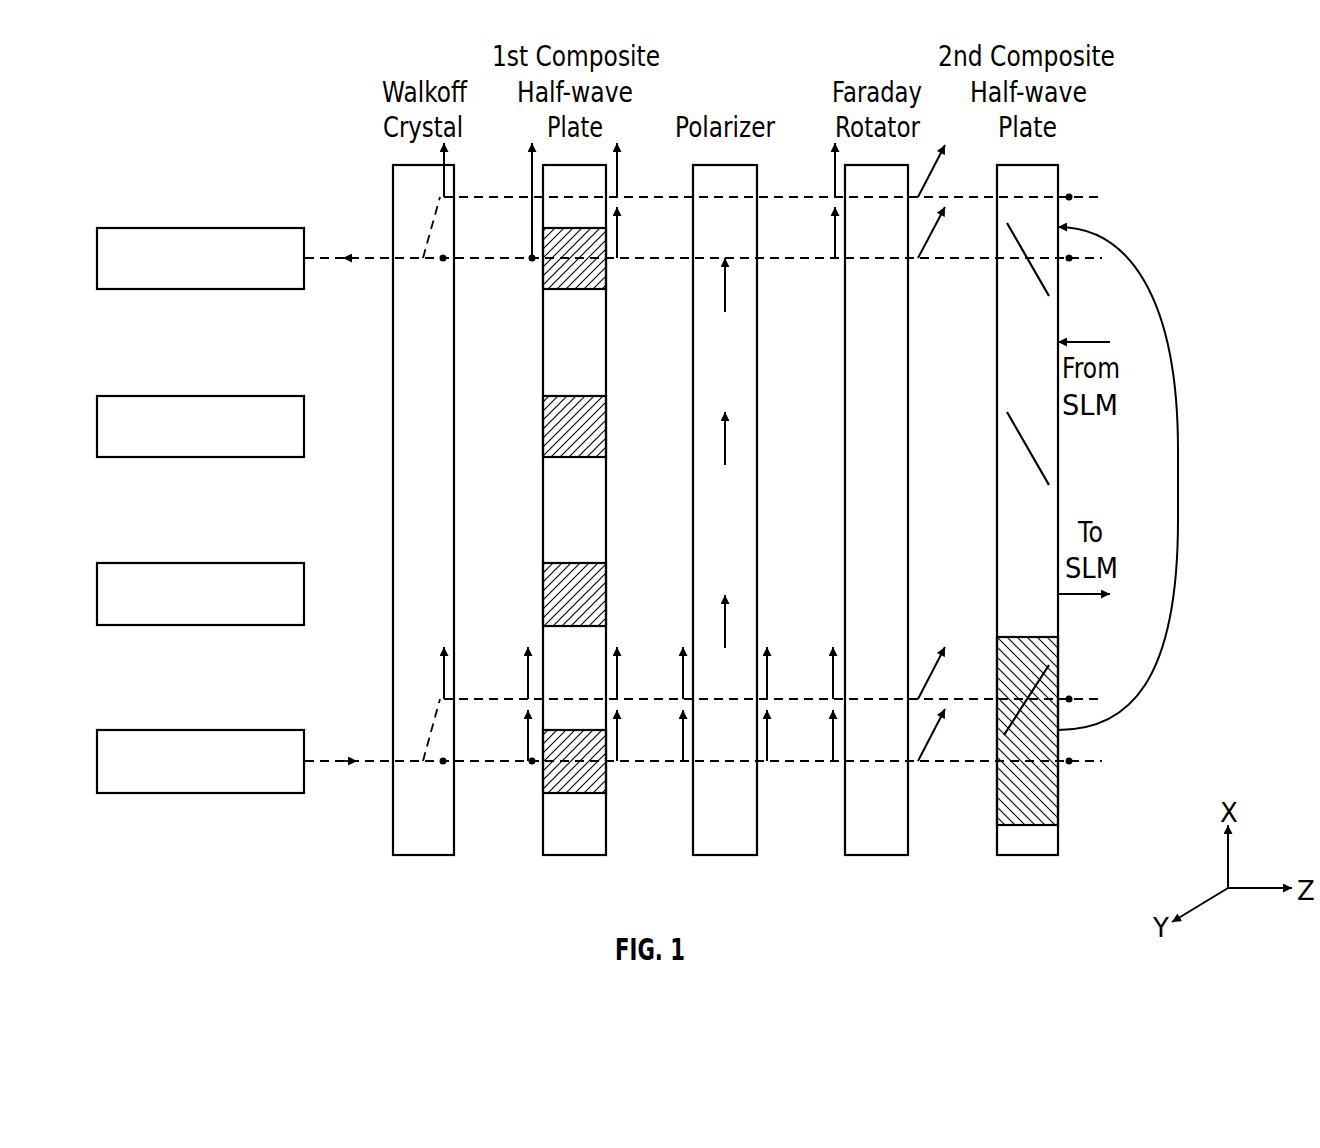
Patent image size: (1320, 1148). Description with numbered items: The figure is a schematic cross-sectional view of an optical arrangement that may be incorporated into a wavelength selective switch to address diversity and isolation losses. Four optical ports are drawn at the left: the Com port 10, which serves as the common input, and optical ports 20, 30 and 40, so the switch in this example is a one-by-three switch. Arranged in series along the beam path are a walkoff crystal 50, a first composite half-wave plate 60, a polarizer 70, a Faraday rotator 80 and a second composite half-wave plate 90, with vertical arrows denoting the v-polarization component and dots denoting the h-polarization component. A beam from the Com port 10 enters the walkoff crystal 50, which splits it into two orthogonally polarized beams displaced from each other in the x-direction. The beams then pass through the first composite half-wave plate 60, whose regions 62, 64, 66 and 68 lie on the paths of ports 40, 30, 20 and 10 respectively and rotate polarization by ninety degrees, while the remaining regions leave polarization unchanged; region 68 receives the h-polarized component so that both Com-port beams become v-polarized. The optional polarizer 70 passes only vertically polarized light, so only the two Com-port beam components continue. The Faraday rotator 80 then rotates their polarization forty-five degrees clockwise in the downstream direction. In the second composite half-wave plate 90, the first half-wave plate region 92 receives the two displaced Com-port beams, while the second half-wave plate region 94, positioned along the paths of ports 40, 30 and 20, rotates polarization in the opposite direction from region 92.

The Com port 10 is at (148, 730).
The optical port 20 is at (148, 563).
The optical port 30 is at (148, 396).
The optical port 40 is at (148, 228).
The walkoff crystal 50 is at (423, 842).
The first composite half-wave plate 60 is at (573, 842).
The half-wave plate region 62 is at (543, 246).
The half-wave plate region 64 is at (543, 422).
The half-wave plate region 66 is at (543, 591).
The half-wave plate region 68 is at (543, 773).
The polarizer 70 is at (725, 842).
The Faraday rotator 80 is at (875, 842).
The second composite half-wave plate 90 is at (1027, 842).
The first half-wave plate region 92 is at (1053, 670).
The second half-wave plate region 94 is at (1010, 437).